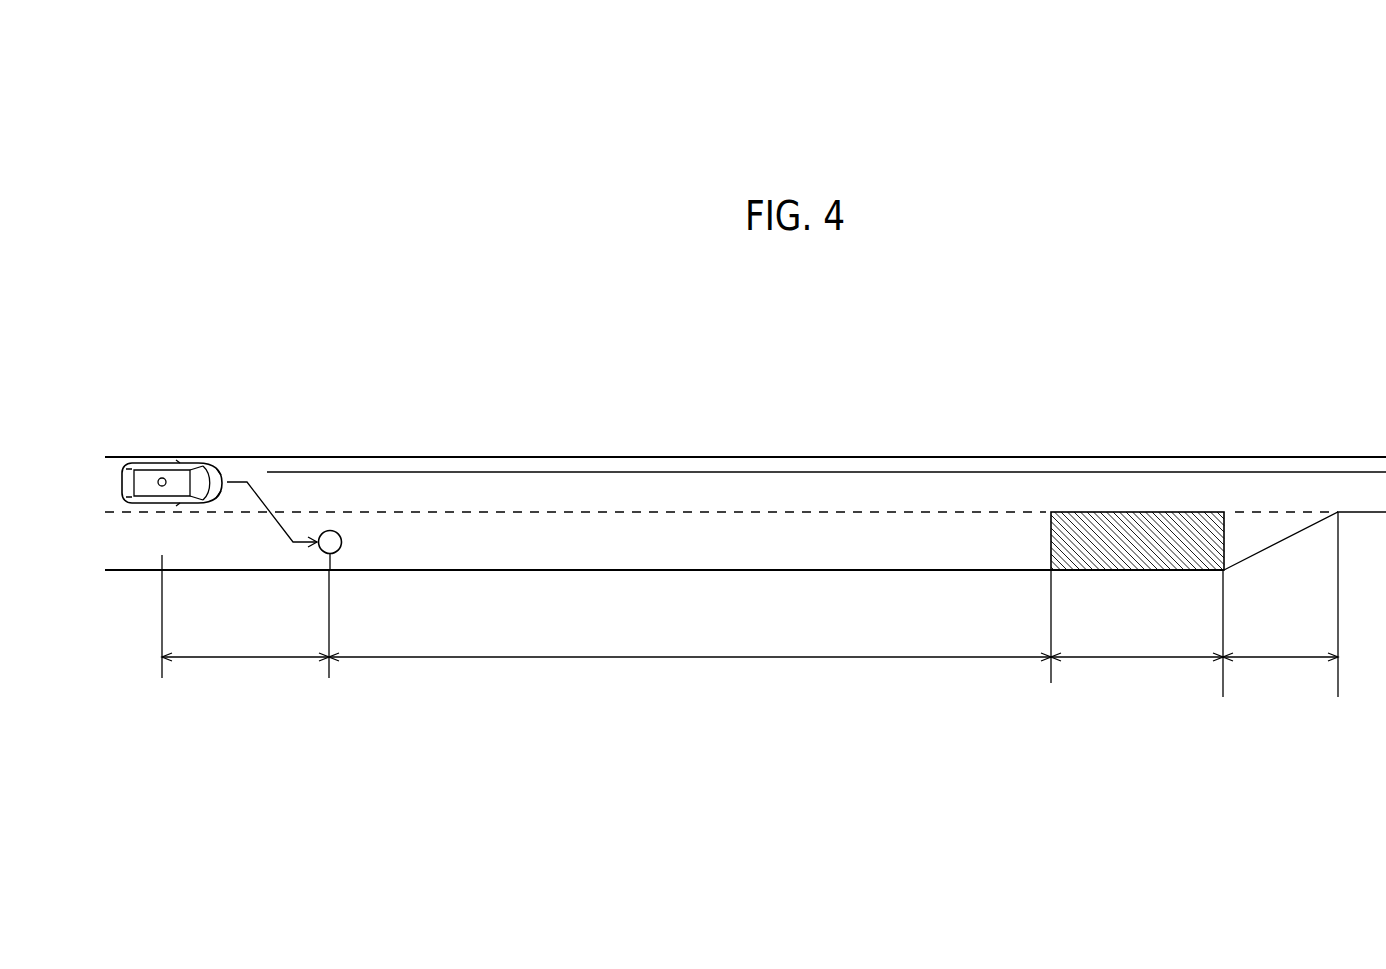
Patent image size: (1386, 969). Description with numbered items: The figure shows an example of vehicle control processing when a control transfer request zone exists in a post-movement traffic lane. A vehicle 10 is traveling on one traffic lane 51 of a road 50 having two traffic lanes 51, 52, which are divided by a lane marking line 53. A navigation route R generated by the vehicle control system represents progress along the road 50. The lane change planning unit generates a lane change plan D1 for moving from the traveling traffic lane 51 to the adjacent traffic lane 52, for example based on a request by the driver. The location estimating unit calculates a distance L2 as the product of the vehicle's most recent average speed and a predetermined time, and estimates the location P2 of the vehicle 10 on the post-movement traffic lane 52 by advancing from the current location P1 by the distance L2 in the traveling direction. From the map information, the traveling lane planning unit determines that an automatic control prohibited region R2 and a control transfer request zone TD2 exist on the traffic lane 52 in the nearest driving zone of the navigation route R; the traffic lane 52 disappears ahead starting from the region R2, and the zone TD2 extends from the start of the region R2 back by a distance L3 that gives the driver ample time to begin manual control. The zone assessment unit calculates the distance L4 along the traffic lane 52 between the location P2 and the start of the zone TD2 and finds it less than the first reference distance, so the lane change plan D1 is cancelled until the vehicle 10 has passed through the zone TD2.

The vehicle 10 is at (140, 463).
The current location P1 is at (162, 478).
The lane change plan D1 is at (247, 482).
The location of the vehicle on the post-movement traffic lane P2 is at (350, 548).
The road 50 is at (442, 457).
The traffic lane 51 is at (657, 501).
The traffic lane 52 is at (657, 554).
The lane marking line 53 is at (707, 512).
The navigation route R is at (885, 473).
The control transfer request zone TD2 is at (1148, 548).
The distance L2 is at (245, 675).
The distance L4 is at (690, 675).
The distance L3 is at (1137, 675).
The automatic control prohibited region R2 is at (1280, 669).